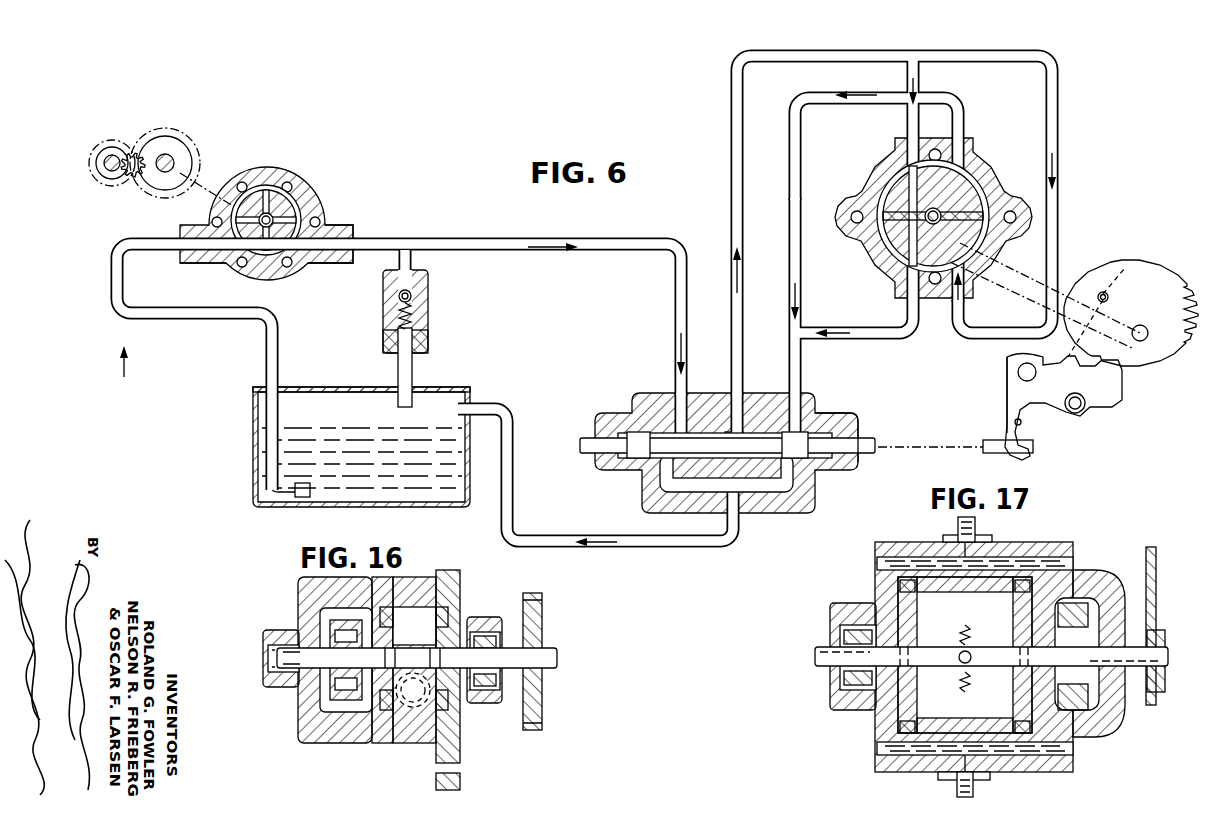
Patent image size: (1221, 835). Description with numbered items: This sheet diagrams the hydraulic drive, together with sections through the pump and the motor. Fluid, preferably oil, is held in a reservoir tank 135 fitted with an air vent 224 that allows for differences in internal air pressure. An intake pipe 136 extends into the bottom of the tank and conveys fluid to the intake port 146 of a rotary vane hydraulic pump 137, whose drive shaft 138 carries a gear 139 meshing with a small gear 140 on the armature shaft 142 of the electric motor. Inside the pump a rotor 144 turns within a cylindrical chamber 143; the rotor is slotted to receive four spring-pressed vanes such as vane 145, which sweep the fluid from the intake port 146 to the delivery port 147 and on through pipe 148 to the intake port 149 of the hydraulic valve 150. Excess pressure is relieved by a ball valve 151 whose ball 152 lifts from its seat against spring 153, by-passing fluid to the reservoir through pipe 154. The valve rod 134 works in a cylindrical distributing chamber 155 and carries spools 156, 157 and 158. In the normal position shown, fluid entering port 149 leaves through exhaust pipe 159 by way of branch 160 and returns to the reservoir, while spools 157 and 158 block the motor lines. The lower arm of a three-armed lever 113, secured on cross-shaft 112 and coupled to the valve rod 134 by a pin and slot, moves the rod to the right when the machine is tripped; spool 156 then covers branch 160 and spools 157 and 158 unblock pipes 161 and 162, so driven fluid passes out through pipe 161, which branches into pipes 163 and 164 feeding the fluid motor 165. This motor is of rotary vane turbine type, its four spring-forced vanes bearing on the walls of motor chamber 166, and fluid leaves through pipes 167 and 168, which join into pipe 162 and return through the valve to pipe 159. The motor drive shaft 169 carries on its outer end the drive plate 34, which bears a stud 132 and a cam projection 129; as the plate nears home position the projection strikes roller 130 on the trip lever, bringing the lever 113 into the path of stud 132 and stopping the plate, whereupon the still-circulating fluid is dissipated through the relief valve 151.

In FIG. 6, the drive plate 34 is at (1160, 274).
In FIG. 17, the drive plate 34 is at (1146, 555).
In FIG. 6, the cross-shaft 112 is at (1018, 370).
In FIG. 6, the three-armed lever 113 is at (1010, 383).
In FIG. 6, the cam projection 129 is at (1112, 388).
In FIG. 6, the roller 130 is at (1083, 411).
In FIG. 6, the stud 132 is at (1104, 291).
In FIG. 6, the valve rod 134 is at (866, 438).
In FIG. 6, the reservoir tank 135 is at (310, 503).
In FIG. 6, the intake pipe 136 is at (213, 316).
In FIG. 6, the hydraulic pump 137 is at (255, 172).
In FIG. 6, the drive shaft 138 is at (174, 160).
In FIG. 16, the drive shaft 138 is at (546, 656).
In FIG. 6, the gear 139 is at (178, 136).
In FIG. 16, the gear 139 is at (542, 622).
In FIG. 6, the small gear 140 is at (116, 151).
In FIG. 6, the armature shaft 142 is at (101, 157).
In FIG. 6, the cylindrical chamber 143 is at (288, 198).
In FIG. 16, the cylindrical chamber 143 is at (418, 613).
In FIG. 6, the rotor 144 is at (326, 226).
In FIG. 6, the vane 145 is at (232, 214).
In FIG. 6, the intake port 146 is at (212, 265).
In FIG. 6, the delivery port 147 is at (315, 263).
In FIG. 6, the pipe 148 is at (393, 242).
In FIG. 6, the intake port 149 is at (673, 406).
In FIG. 6, the hydraulic valve 150 is at (643, 407).
In FIG. 6, the ball valve 151 is at (430, 277).
In FIG. 6, the ball 152 is at (412, 297).
In FIG. 6, the spring 153 is at (413, 318).
In FIG. 6, the pipe 154 is at (409, 371).
In FIG. 6, the cylindrical distributing chamber 155 is at (824, 431).
In FIG. 6, the spool 156 is at (641, 456).
In FIG. 6, the spool 157 is at (727, 398).
In FIG. 6, the spool 158 is at (799, 456).
In FIG. 6, the exhaust pipe 159 is at (703, 541).
In FIG. 6, the branch 160 is at (662, 488).
In FIG. 6, the pipe 161 is at (732, 226).
In FIG. 6, the pipe 162 is at (801, 378).
In FIG. 6, the pipe 163 is at (906, 121).
In FIG. 17, the pipe 163 is at (957, 530).
In FIG. 6, the pipe 164 is at (1057, 124).
In FIG. 17, the pipe 164 is at (957, 786).
In FIG. 6, the fluid motor 165 is at (888, 173).
In FIG. 6, the motor chamber 166 is at (989, 203).
In FIG. 17, the motor chamber 166 is at (910, 710).
In FIG. 6, the pipe 167 is at (965, 122).
In FIG. 17, the pipe 167 is at (976, 527).
In FIG. 6, the pipe 168 is at (858, 328).
In FIG. 17, the pipe 168 is at (975, 789).
In FIG. 6, the drive shaft 169 is at (880, 247).
In FIG. 17, the drive shaft 169 is at (1135, 648).
In FIG. 6, the air vent 224 is at (337, 363).